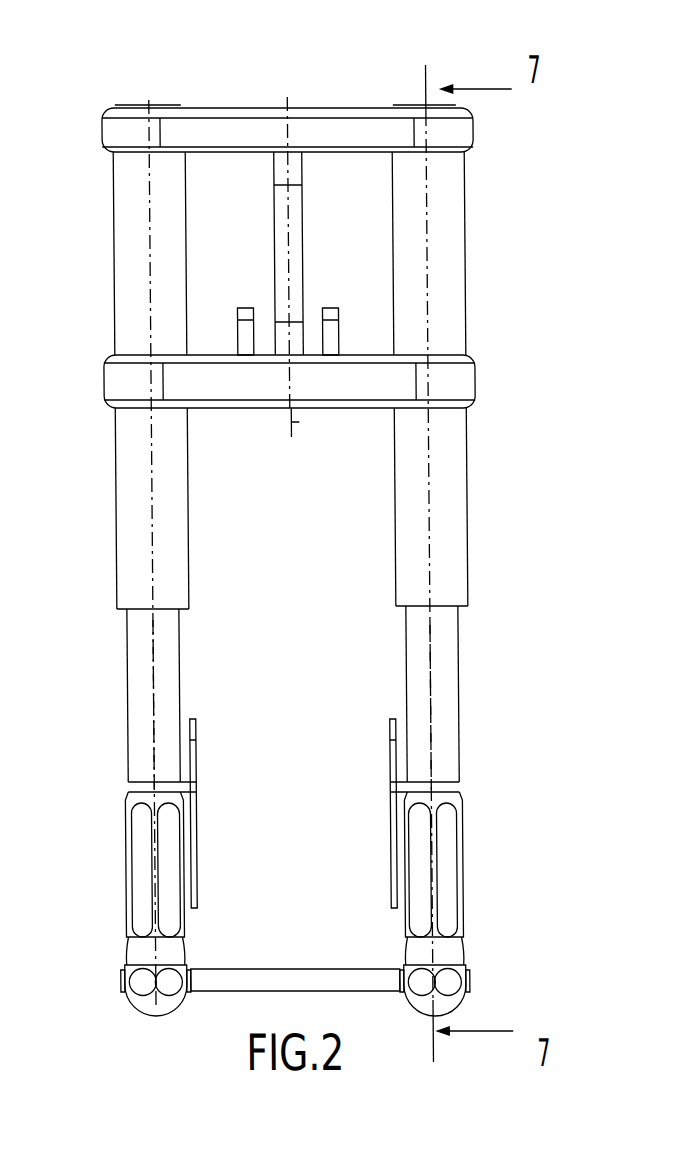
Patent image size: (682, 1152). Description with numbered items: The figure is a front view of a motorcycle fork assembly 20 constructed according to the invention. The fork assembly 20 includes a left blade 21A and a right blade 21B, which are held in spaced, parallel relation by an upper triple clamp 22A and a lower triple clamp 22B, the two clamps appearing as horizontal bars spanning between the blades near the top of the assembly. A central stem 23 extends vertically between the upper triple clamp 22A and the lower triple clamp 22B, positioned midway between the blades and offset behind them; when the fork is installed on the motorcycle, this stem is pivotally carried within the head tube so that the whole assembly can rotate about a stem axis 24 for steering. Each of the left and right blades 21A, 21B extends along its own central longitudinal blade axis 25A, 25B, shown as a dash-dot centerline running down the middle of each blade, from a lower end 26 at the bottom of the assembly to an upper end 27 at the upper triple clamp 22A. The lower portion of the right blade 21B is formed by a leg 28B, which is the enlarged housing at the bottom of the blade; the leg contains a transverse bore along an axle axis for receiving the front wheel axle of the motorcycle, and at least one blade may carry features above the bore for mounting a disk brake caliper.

The motorcycle fork assembly 20 is at (340, 494).
The left blade 21A is at (92, 484).
The right blade 21B is at (500, 494).
The upper triple clamp 22A is at (457, 127).
The lower triple clamp 22B is at (452, 366).
The central stem 23 is at (295, 244).
The stem axis 24 is at (296, 422).
The central longitudinal blade axis 25A is at (147, 673).
The central longitudinal blade axis 25B is at (432, 663).
The lower end 26 is at (467, 998).
The upper end 27 is at (533, 115).
The leg 28B is at (443, 861).